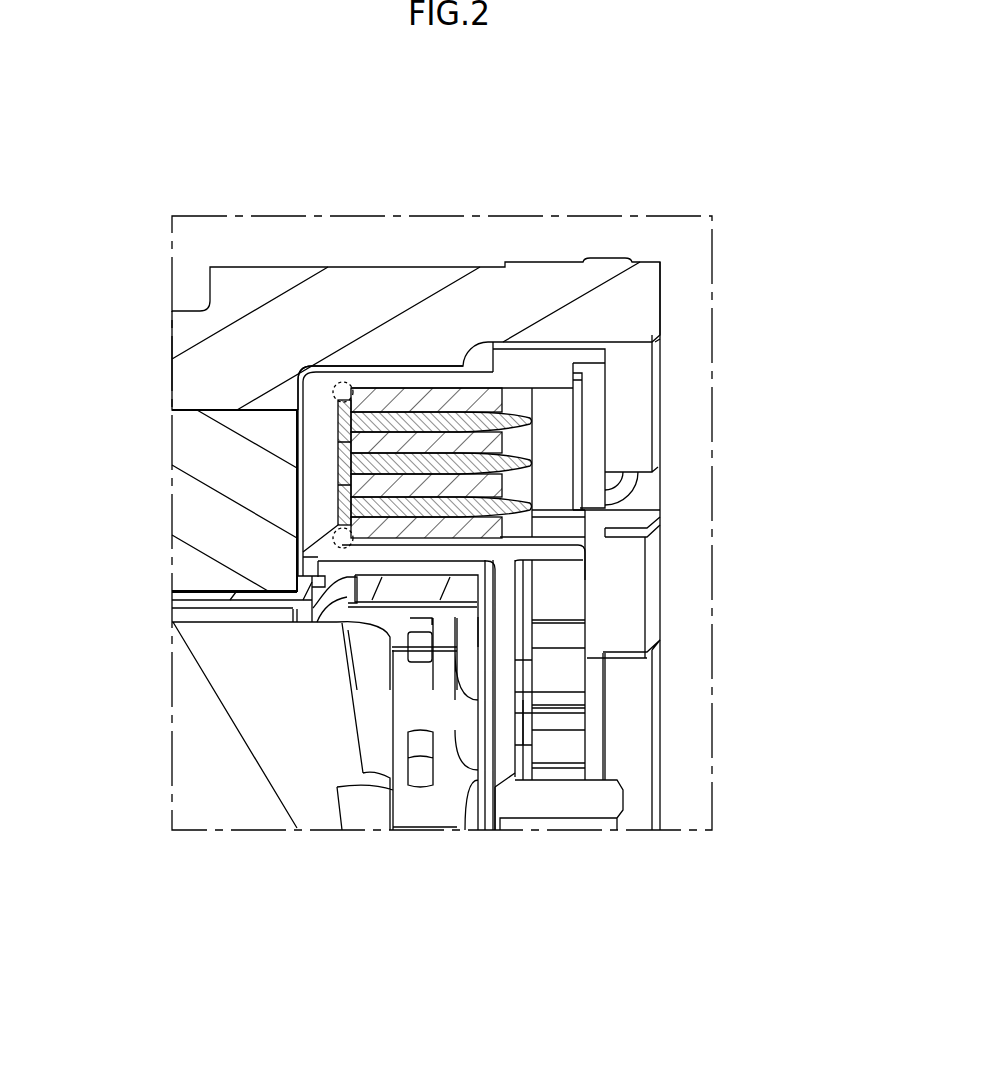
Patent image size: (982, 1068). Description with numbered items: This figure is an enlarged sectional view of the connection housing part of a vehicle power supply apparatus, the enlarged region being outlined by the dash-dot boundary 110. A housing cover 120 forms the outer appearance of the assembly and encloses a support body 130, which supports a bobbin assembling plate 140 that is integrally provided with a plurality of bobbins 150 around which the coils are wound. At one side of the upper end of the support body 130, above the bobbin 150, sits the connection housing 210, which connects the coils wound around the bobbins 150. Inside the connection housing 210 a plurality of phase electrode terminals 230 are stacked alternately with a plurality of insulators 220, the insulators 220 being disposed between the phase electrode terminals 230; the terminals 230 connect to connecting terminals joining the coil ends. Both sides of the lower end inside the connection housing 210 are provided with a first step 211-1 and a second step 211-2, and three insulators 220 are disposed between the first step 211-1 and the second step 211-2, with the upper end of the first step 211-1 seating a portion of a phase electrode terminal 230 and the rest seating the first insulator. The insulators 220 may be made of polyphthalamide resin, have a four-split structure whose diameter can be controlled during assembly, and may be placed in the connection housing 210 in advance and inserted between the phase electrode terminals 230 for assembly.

The electronic brake system housing section 110 is at (728, 136).
The housing cover 120 is at (637, 305).
The support body 130 is at (213, 453).
The bobbin assembling plate 140 is at (182, 605).
The bobbin 150 is at (213, 760).
The connection housing 210 is at (320, 400).
The first step 211-1 is at (348, 382).
The second step 211-2 is at (343, 548).
The insulator 220 is at (537, 421).
The phase electrode terminal 230 is at (505, 440).